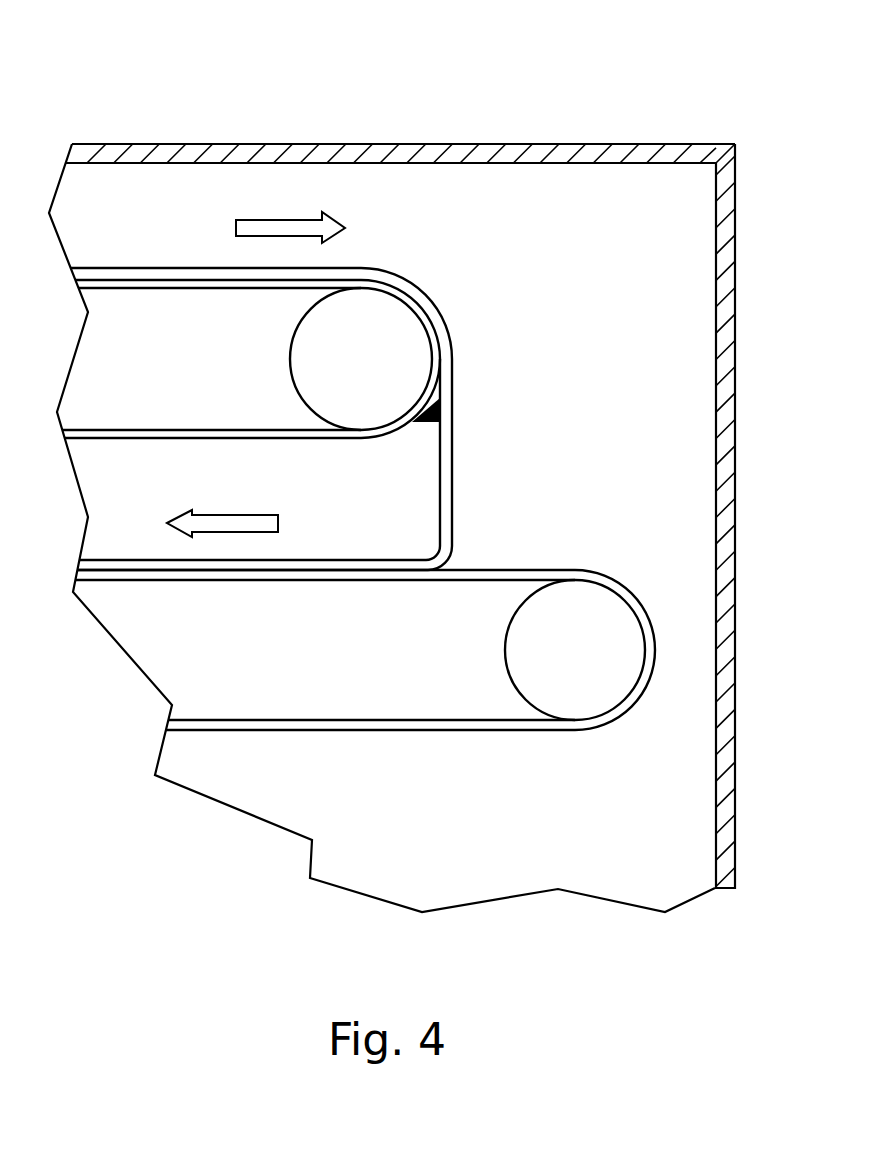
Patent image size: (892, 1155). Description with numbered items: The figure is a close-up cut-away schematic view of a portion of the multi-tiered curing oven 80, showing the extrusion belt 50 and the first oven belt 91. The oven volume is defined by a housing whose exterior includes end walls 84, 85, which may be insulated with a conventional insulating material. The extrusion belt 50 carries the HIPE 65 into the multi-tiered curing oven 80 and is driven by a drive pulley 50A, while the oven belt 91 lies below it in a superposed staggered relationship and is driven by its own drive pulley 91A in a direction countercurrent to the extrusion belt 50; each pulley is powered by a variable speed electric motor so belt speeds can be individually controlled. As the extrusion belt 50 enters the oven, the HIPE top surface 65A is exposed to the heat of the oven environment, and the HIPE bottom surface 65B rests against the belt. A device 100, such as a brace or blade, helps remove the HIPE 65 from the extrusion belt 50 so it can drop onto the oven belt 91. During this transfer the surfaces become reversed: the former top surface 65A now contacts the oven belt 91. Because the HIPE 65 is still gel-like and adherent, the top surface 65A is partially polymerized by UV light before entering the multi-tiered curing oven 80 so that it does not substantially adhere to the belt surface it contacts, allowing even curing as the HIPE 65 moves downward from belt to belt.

The multi-tiered curing oven 80 is at (440, 133).
The end wall 84 is at (242, 143).
The end wall 85 is at (735, 663).
The extrusion belt 50 is at (250, 286).
The drive pulley 50A is at (398, 327).
The HIPE 65 is at (329, 464).
The HIPE top surface 65A is at (453, 458).
The HIPE bottom surface 65B is at (440, 495).
The device 100 is at (437, 410).
The oven belt 91 is at (242, 578).
The drive pulley 91A is at (573, 605).